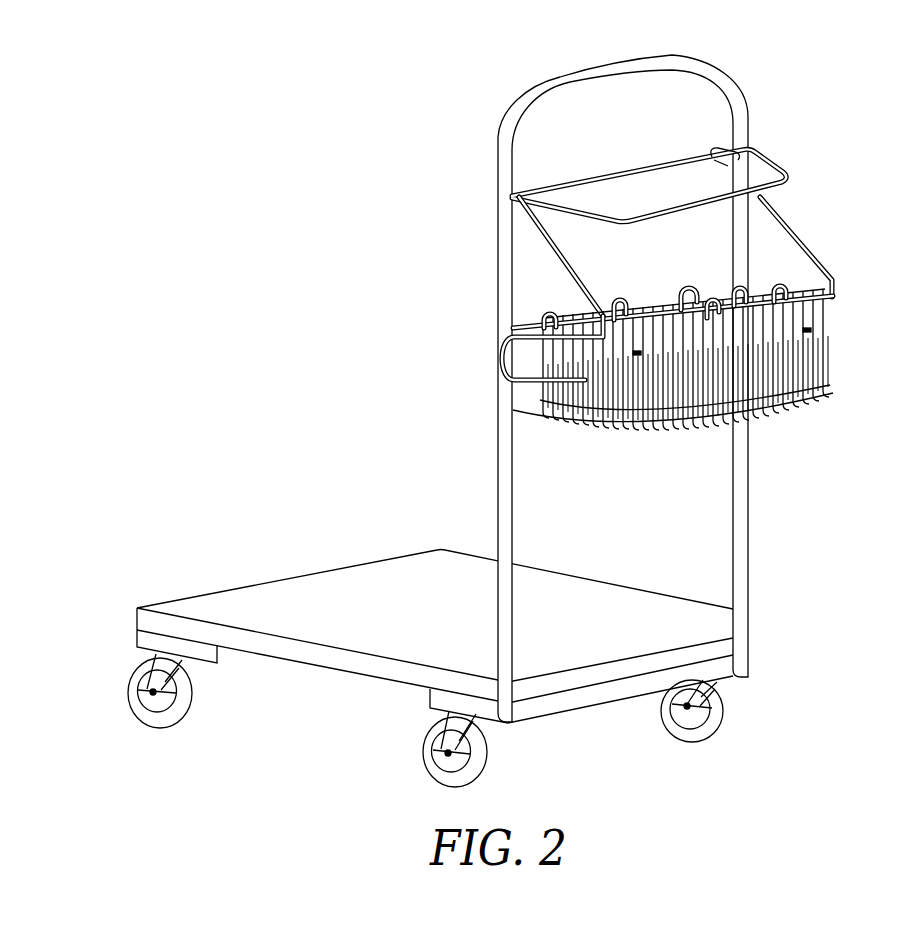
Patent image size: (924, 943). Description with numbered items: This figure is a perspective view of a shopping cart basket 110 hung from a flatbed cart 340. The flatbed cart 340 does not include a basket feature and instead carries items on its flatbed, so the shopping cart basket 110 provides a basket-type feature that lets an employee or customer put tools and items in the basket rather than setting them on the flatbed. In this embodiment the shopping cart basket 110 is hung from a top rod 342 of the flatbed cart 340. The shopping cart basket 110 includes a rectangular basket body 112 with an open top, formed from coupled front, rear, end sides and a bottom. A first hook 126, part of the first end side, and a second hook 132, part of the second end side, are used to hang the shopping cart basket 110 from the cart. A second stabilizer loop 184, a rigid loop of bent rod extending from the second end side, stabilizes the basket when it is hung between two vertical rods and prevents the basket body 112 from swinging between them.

The shopping cart basket 110 is at (521, 421).
The basket body 112 is at (793, 392).
The first hook 126 is at (722, 153).
The second hook 132 is at (512, 195).
The second stabilizer loop 184 is at (508, 362).
The flatbed cart 340 is at (330, 592).
The top rod 342 is at (633, 185).